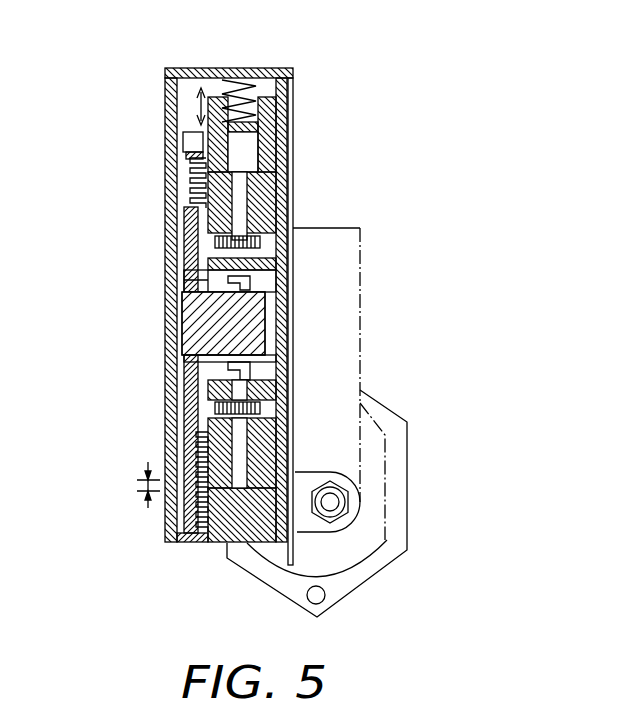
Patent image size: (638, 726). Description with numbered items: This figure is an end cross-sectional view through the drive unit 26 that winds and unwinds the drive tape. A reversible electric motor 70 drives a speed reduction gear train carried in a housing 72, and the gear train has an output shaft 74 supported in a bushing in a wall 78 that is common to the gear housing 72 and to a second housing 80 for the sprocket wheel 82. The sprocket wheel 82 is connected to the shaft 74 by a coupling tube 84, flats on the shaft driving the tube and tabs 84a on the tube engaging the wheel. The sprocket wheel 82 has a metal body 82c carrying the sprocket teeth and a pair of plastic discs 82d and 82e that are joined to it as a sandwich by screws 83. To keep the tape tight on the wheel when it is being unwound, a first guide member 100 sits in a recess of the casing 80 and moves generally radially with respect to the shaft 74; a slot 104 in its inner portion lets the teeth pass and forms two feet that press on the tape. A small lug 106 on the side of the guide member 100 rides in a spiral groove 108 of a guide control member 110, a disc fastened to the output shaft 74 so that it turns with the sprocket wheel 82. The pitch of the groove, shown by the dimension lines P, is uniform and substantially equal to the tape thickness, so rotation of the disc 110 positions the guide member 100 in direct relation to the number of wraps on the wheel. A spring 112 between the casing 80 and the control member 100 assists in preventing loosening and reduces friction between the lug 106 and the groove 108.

The drive unit 26 is at (395, 352).
The reversible electric motor 70 is at (407, 475).
The housing 72 is at (360, 328).
The output shaft 74 is at (187, 316).
The wall 78 is at (287, 160).
The housing 80 is at (212, 545).
The sprocket wheel 82 is at (200, 424).
The metal body 82c is at (250, 193).
The plastic disc 82d is at (215, 236).
The plastic disc 82e is at (262, 246).
The screws 83 is at (217, 398).
The coupling tube 84 is at (222, 283).
The tabs 84a is at (250, 282).
The first guide member 100 is at (293, 78).
The slot 104 is at (262, 128).
The lug 106 is at (190, 141).
The spiral groove 108 is at (202, 157).
The guide control member 110 is at (190, 119).
The spring 112 is at (252, 85).
The pitch P is at (148, 463).